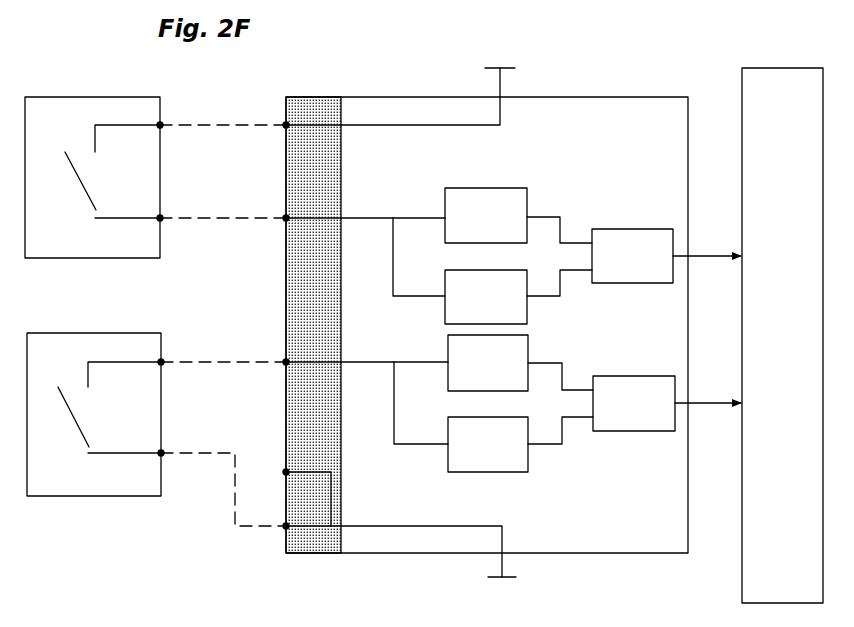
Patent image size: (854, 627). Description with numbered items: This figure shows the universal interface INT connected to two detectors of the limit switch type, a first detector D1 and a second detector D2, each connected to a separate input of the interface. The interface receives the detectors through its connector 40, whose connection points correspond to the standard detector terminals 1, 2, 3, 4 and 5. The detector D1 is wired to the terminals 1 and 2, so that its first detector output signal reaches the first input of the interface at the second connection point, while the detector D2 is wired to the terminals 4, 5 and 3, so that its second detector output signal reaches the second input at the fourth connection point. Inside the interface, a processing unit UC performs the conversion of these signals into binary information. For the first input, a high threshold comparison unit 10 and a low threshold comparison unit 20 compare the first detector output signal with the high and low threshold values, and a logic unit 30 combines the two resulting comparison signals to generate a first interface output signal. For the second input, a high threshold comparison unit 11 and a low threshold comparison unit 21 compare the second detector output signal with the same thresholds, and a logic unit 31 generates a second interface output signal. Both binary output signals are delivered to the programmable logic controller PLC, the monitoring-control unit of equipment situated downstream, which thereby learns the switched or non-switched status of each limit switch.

The terminal 1 is at (388, 86).
The terminal 2 is at (353, 244).
The terminal 3 is at (390, 555).
The terminal 4 is at (356, 390).
The terminal 5 is at (298, 487).
The high threshold comparison unit 10 is at (518, 215).
The low threshold comparison unit 20 is at (518, 297).
The logic unit 30 is at (666, 256).
The high threshold comparison unit 11 is at (520, 363).
The low threshold comparison unit 21 is at (520, 444).
The logic unit 31 is at (667, 402).
The connector 40 is at (307, 97).
The detector D1 is at (83, 97).
The detector D2 is at (72, 333).
The universal interface INT is at (421, 80).
The processing unit UC is at (578, 97).
The programmable logic controller PLC is at (782, 335).